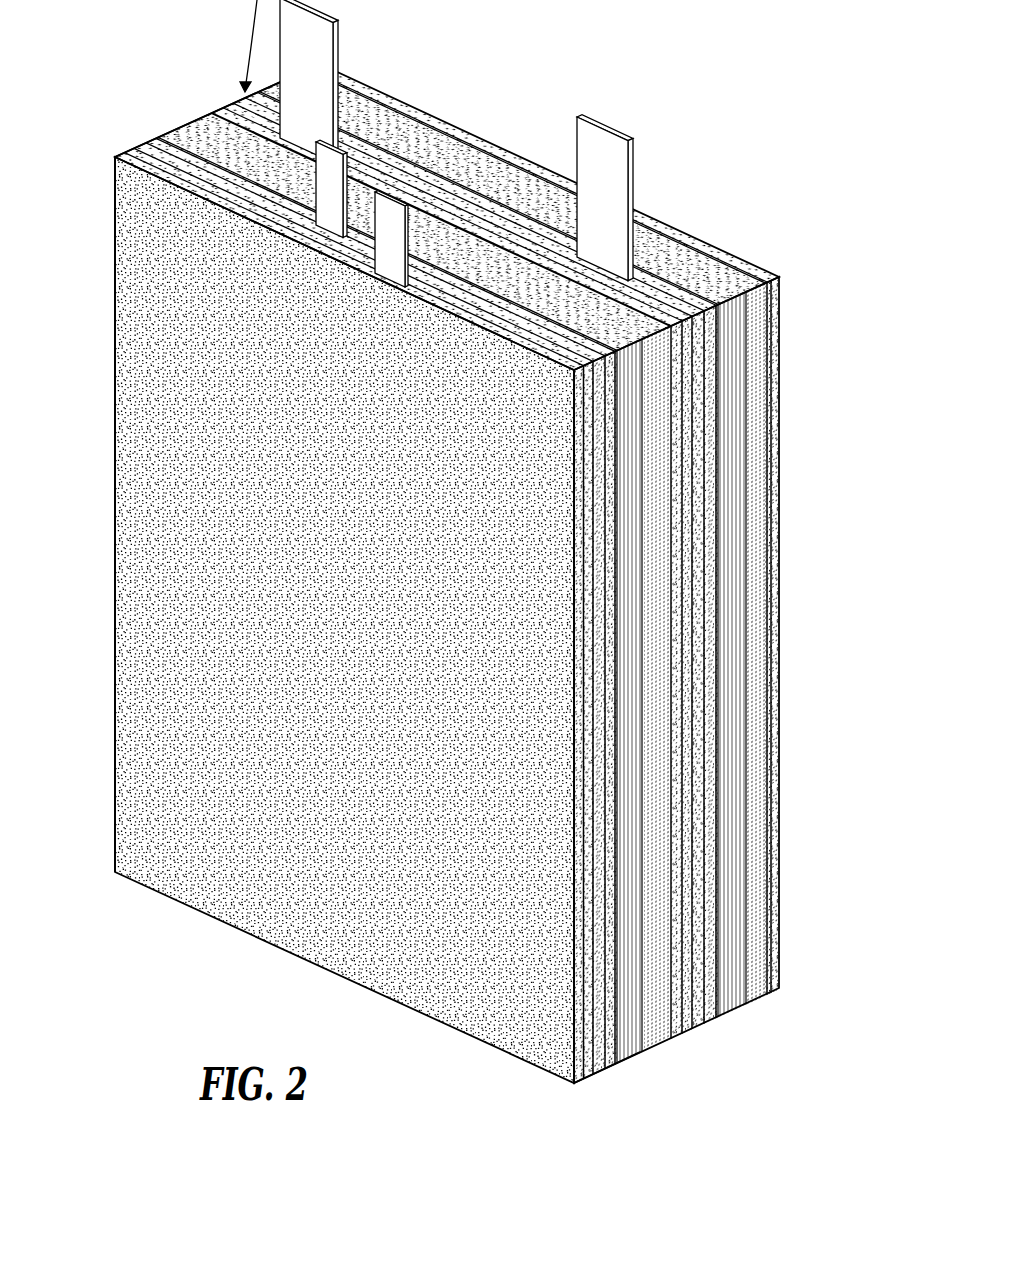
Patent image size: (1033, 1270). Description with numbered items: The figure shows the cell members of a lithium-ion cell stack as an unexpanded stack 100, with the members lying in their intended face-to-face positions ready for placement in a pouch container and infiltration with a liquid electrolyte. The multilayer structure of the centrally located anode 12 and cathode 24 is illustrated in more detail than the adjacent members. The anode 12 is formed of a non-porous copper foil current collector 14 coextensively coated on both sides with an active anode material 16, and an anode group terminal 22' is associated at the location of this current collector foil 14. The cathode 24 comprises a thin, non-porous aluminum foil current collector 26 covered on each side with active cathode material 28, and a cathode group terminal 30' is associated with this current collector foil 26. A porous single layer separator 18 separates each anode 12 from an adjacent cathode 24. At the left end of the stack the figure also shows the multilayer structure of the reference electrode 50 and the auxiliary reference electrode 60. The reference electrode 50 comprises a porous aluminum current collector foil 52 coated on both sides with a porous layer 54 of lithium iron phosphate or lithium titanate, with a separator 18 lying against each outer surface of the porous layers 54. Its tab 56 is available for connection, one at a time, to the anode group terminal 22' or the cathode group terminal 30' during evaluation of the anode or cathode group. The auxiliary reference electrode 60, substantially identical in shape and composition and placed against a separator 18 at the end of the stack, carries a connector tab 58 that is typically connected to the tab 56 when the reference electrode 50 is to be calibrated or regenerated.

The unexpanded stack 100 is at (182, 107).
The anode 12 is at (781, 284).
The copper foil current collector 14 is at (700, 1030).
The active anode material 16 is at (698, 1032).
The separator 18 is at (731, 262).
The anode group terminal 22' is at (652, 197).
The cathode 24 is at (214, 103).
The aluminum foil current collector 26 is at (683, 1037).
The active cathode material 28 is at (678, 1038).
The cathode group terminal 30' is at (349, 81).
The reference electrode 50 is at (135, 139).
The porous aluminum current collector foil 52 is at (584, 1080).
The porous layer 54 is at (127, 219).
The tab 56 is at (326, 180).
The connector tab 58 is at (388, 216).
The auxiliary reference electrode 60 is at (113, 148).